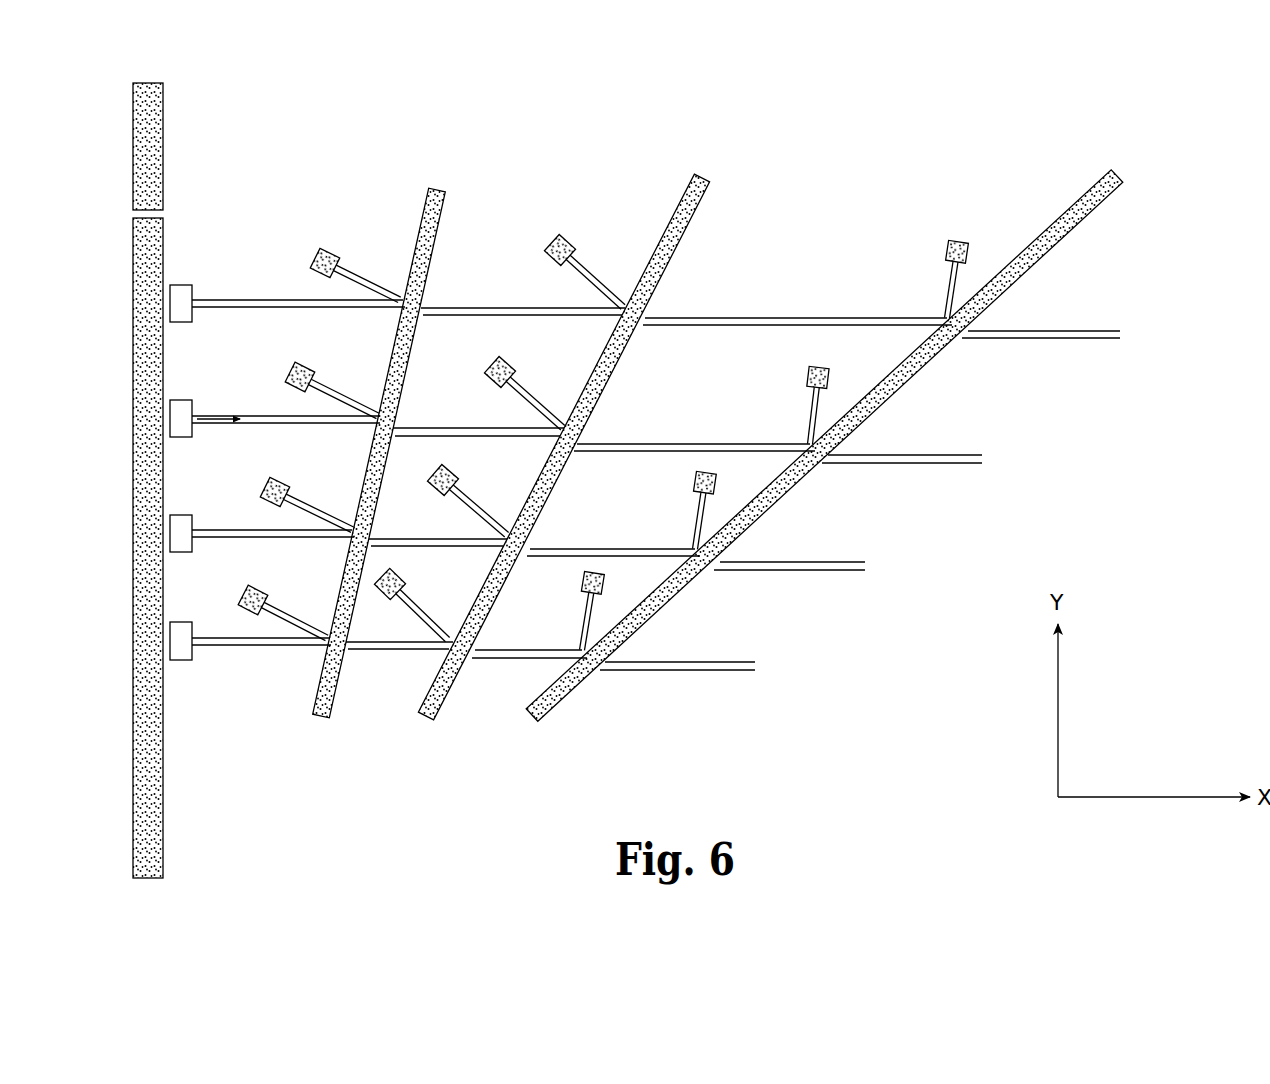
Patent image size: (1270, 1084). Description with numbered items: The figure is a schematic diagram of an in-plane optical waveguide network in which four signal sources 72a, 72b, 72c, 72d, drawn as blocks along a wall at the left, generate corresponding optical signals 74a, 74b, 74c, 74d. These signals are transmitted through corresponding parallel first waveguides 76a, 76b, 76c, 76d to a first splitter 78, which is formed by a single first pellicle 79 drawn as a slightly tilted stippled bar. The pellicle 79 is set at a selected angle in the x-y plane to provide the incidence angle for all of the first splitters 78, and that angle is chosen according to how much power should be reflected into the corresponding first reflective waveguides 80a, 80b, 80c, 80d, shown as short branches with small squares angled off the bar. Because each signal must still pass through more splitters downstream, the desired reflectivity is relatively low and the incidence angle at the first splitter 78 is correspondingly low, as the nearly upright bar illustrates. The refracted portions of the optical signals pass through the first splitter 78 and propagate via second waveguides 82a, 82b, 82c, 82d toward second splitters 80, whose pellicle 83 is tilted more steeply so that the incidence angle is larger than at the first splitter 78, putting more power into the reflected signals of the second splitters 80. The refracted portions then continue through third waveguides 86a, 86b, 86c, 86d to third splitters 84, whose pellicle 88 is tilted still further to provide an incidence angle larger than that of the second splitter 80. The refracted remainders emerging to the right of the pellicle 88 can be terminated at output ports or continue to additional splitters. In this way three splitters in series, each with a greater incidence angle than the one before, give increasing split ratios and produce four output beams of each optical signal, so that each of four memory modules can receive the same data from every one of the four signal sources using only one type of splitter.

The signal source 72a is at (193, 285).
The signal source 72b is at (192, 400).
The signal source 72c is at (194, 515).
The signal source 72d is at (197, 613).
The optical signal 74a is at (235, 299).
The optical signal 74b is at (293, 416).
The optical signal 74c is at (223, 530).
The optical signal 74d is at (208, 645).
The first waveguide 76a is at (254, 309).
The first waveguide 76b is at (252, 424).
The first waveguide 76c is at (260, 538).
The first waveguide 76d is at (270, 645).
The first splitter 78 is at (430, 302).
The first pellicle 79 is at (328, 708).
The first reflective waveguide 80a is at (347, 270).
The first reflective waveguide 80b is at (333, 384).
The first reflective waveguide 80c is at (303, 478).
The first reflective waveguide 80d is at (292, 616).
The second splitter 80 is at (653, 313).
The second waveguide 82a is at (508, 316).
The second waveguide 82b is at (465, 437).
The second waveguide 82c is at (415, 546).
The second waveguide 82d is at (365, 650).
The pellicle 83 is at (437, 710).
The third splitter 84 is at (985, 330).
The third waveguide 86a is at (763, 318).
The third waveguide 86b is at (700, 444).
The third waveguide 86c is at (606, 549).
The third waveguide 86d is at (505, 660).
The pellicle 88 is at (548, 712).